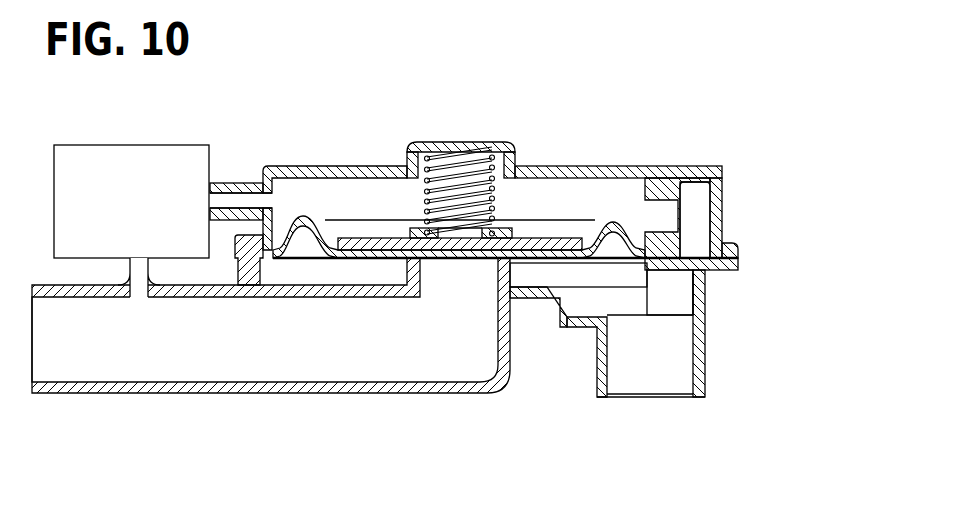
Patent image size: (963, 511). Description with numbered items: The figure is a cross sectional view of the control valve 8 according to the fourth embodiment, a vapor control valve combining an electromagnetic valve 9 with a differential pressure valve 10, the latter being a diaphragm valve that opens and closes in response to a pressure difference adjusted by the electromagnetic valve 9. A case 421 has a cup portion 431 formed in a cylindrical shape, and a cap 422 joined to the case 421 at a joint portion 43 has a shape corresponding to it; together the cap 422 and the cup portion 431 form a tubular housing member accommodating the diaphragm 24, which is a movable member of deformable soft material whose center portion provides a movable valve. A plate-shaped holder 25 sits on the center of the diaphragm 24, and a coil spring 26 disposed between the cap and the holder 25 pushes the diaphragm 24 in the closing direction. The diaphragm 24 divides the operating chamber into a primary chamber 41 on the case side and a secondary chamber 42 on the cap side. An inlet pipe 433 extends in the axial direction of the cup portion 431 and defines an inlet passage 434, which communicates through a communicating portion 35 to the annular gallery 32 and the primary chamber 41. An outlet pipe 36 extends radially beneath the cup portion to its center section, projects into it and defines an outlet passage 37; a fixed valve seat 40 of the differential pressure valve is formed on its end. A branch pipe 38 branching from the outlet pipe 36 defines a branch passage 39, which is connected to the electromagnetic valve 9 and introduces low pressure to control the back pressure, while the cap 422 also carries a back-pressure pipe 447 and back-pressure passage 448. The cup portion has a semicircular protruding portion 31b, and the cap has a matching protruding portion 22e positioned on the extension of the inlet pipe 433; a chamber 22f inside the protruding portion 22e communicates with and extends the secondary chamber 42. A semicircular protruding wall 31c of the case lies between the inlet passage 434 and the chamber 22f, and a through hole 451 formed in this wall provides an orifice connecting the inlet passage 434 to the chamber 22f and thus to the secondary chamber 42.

The control valve 8 is at (736, 130).
The electromagnetic valve 9 is at (127, 143).
The differential pressure valve 10 is at (458, 142).
The protruding portion 22e is at (723, 178).
The chamber 22f is at (697, 237).
The diaphragm 24 is at (580, 202).
The holder 25 is at (542, 238).
The coil spring 26 is at (443, 167).
The protruding portion 31b is at (726, 278).
The protruding wall 31c is at (665, 370).
The gallery 32 is at (573, 273).
The communicating portion 35 is at (614, 265).
The outlet pipe 36 is at (264, 393).
The outlet passage 37 is at (330, 338).
The branch pipe 38 is at (116, 288).
The branch passage 39 is at (137, 288).
The fixed valve seat 40 is at (478, 268).
The primary chamber 41 is at (666, 166).
The secondary chamber 42 is at (604, 205).
The joint portion 43 is at (739, 256).
The case 421 is at (742, 270).
The cap 422 is at (493, 142).
The cup portion 431 is at (234, 265).
The inlet pipe 433 is at (711, 366).
The inlet passage 434 is at (676, 385).
The back-pressure pipe 447 is at (228, 182).
The back-pressure passage 448 is at (247, 200).
The through hole 451 is at (696, 305).